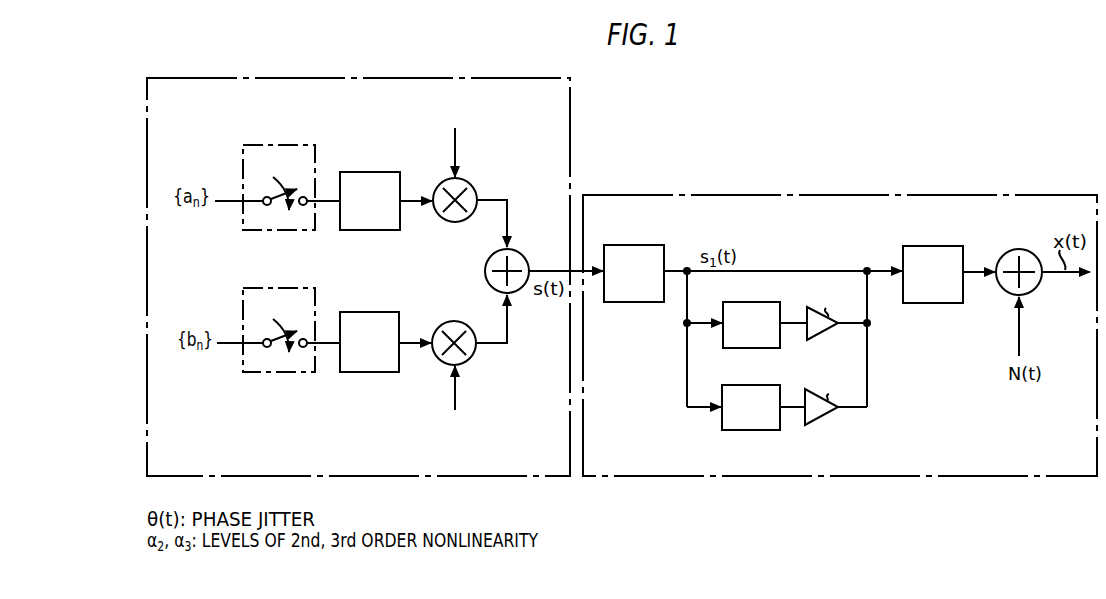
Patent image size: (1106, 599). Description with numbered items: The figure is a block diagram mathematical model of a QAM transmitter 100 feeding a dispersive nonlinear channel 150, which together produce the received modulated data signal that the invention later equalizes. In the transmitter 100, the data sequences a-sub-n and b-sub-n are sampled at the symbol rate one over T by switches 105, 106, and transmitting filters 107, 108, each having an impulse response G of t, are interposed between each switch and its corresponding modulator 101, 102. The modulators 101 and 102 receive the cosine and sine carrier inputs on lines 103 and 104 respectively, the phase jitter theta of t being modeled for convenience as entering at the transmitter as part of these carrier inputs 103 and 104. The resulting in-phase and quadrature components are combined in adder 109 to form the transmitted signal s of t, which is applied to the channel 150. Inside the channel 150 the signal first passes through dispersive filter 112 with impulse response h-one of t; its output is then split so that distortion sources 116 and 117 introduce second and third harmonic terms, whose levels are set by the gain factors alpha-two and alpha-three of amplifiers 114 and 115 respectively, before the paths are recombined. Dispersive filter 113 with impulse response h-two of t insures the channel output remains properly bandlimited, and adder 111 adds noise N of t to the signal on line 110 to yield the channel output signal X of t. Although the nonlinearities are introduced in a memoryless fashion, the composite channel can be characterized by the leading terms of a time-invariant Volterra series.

The QAM transmitter 100 is at (294, 78).
The nonlinear channel 150 is at (600, 195).
The switch 105 is at (270, 145).
The switch 106 is at (297, 372).
The transmitting filter 107 is at (368, 172).
The transmitting filter 108 is at (372, 312).
The modulator 101 is at (448, 220).
The modulator 102 is at (446, 324).
The carrier input line 103 is at (457, 141).
The carrier input line 104 is at (453, 396).
The adder 109 is at (526, 256).
The dispersive filter 112 is at (643, 302).
The distortion source 116 is at (743, 302).
The distortion source 117 is at (742, 385).
The amplifier 114 is at (815, 340).
The amplifier 115 is at (815, 425).
The dispersive filter 113 is at (932, 246).
The signal line 110 is at (975, 276).
The adder 111 is at (1016, 250).